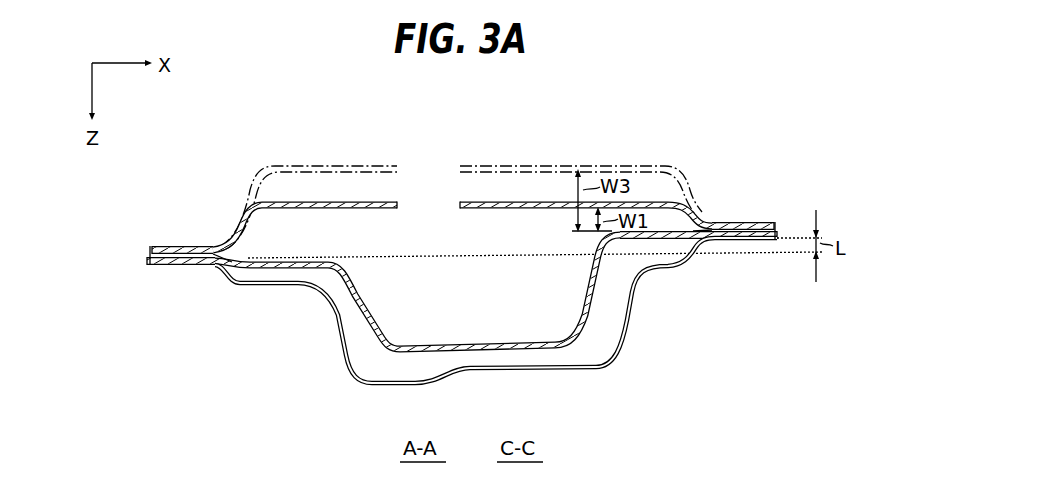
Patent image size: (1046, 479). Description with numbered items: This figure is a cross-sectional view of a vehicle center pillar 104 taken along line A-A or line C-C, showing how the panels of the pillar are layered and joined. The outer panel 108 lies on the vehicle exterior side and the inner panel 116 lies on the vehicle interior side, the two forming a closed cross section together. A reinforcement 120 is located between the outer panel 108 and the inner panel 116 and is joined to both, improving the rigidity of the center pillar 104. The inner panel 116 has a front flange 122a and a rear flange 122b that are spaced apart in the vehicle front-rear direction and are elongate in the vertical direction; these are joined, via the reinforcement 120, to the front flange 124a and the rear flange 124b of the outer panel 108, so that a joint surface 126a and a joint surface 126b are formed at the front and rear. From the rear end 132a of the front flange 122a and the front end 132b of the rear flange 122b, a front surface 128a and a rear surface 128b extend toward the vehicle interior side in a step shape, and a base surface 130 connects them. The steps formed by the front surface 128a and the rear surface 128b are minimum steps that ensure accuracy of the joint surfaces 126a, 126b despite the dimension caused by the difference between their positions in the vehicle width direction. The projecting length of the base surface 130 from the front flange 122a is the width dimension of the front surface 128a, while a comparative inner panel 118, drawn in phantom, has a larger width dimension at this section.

The center pillar 104 is at (590, 146).
The outer panel 108 is at (340, 350).
The inner panel 116 is at (515, 196).
The inner panel 118 is at (327, 165).
The reinforcement 120 is at (455, 343).
The front flange 122a is at (745, 221).
The rear flange 122b is at (183, 246).
The front flange 124a is at (742, 240).
The rear flange 124b is at (181, 266).
The joint surface 126a is at (788, 222).
The joint surface 126b is at (142, 256).
The front surface 128a is at (690, 213).
The rear surface 128b is at (226, 246).
The base surface 130 is at (350, 209).
The rear end 132a is at (703, 212).
The front end 132b is at (214, 250).